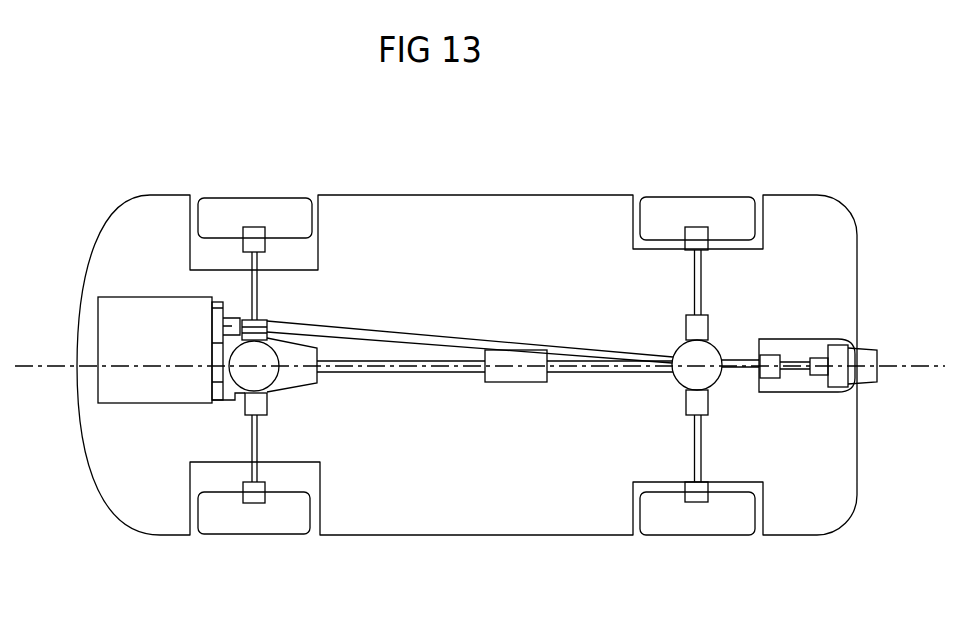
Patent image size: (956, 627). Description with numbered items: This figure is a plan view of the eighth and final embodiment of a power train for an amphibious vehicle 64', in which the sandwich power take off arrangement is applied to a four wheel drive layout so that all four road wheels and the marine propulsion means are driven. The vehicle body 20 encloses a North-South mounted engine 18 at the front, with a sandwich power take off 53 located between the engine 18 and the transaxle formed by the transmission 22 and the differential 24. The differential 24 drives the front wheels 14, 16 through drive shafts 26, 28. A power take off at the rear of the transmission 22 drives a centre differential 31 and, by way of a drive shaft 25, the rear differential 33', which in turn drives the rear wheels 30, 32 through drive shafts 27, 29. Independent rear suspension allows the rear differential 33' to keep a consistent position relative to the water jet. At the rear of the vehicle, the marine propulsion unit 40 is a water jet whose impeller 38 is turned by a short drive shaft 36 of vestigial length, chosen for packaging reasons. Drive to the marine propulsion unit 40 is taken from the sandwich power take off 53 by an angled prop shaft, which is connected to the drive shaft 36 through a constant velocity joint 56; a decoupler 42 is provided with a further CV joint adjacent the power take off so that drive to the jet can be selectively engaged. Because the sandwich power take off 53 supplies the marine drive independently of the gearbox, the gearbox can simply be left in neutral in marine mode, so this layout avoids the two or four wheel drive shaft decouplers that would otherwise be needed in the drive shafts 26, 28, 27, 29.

The front wheel 14 is at (270, 205).
The front wheel 16 is at (235, 525).
The engine 18 is at (130, 337).
The vehicle body 20 is at (82, 367).
The transmission 22 is at (300, 353).
The differential 24 is at (267, 328).
The drive shaft 25 is at (402, 363).
The drive shaft 26 is at (262, 354).
The drive shaft 27 is at (695, 275).
The drive shaft 28 is at (252, 442).
The drive shaft 29 is at (700, 452).
The rear wheel 30 is at (670, 220).
The centre differential 31 is at (523, 352).
The rear wheel 32 is at (715, 513).
The rear differential 33' is at (770, 273).
The drive shaft 36 is at (783, 365).
The impeller 38 is at (838, 353).
The marine propulsion unit 40 is at (803, 347).
The decoupler 42 is at (229, 320).
The sandwich power take off 53 is at (207, 290).
The constant velocity joint 56 is at (770, 356).
The vehicle floor 64' is at (480, 432).